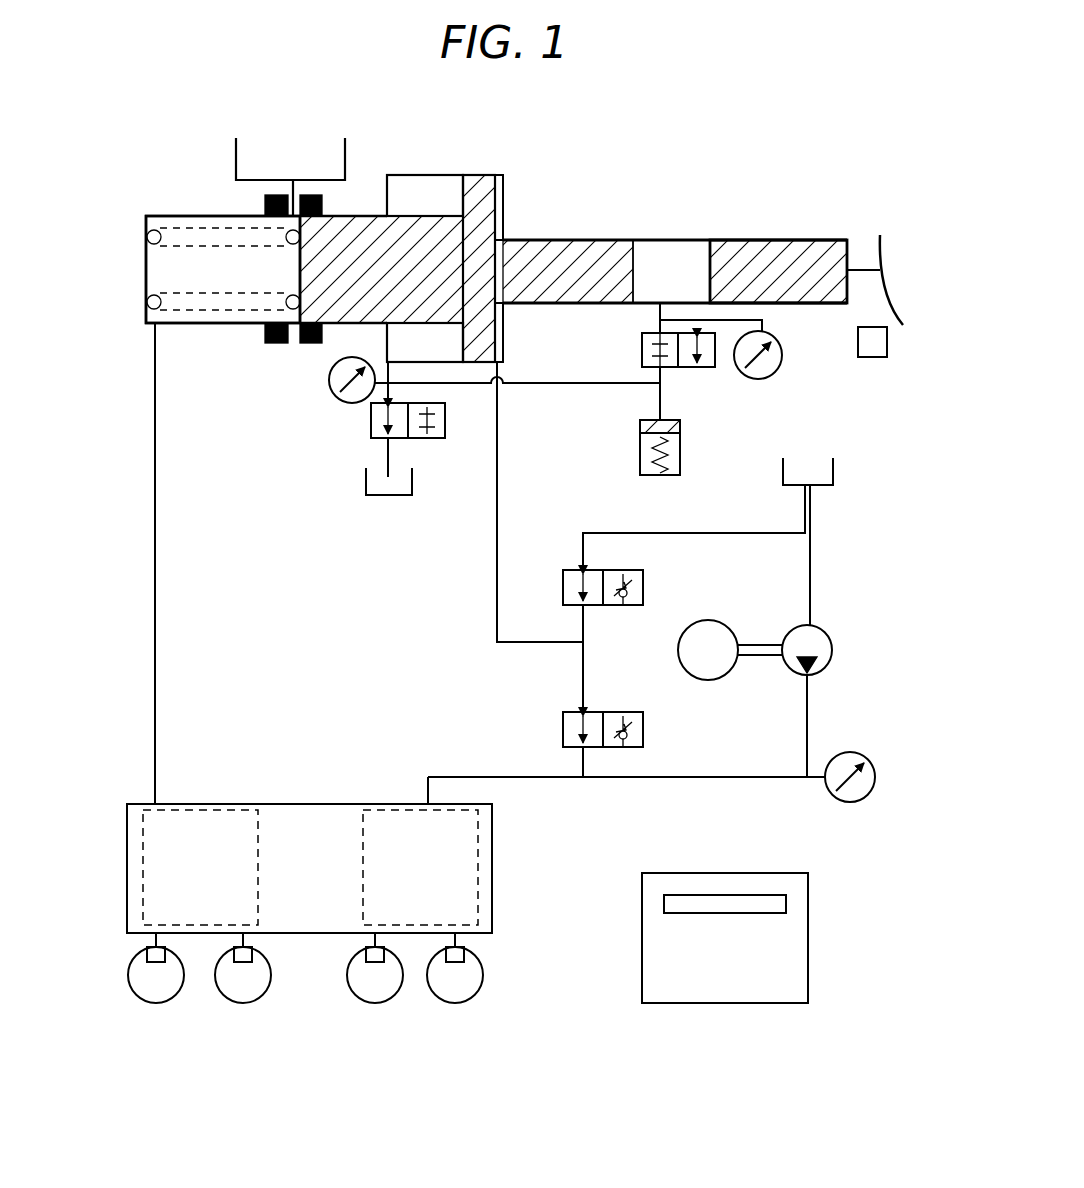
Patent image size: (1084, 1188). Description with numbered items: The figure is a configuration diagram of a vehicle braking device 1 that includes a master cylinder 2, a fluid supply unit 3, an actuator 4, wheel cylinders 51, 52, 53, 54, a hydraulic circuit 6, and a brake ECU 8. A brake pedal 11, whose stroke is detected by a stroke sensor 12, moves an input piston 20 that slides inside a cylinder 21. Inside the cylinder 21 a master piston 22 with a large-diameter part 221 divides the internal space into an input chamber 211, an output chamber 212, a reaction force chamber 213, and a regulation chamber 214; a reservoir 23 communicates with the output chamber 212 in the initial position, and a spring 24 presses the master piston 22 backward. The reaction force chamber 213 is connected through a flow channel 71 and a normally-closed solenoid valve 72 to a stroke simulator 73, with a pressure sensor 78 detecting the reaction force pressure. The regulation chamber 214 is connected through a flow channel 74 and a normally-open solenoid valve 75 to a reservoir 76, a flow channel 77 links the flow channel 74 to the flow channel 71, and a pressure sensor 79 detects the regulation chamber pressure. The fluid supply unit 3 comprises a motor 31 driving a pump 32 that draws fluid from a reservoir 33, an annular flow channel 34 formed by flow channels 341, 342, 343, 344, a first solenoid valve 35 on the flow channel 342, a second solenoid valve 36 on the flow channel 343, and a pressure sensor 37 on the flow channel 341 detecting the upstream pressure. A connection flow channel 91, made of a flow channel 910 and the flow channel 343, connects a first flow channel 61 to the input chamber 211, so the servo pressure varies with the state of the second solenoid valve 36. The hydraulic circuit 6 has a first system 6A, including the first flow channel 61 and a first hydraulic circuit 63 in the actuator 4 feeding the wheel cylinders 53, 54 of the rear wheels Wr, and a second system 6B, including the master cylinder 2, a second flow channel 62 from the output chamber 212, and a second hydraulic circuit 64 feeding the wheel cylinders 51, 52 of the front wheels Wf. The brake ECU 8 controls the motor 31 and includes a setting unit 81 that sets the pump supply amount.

The vehicle braking device 1 is at (118, 143).
The master cylinder 2 is at (130, 210).
The fluid supply unit 3 is at (880, 497).
The actuator 4 is at (127, 840).
The hydraulic circuit 6 is at (128, 692).
The first system 6A is at (412, 728).
The second system 6B is at (130, 448).
The brake ECU 8 is at (642, 912).
The brake pedal 11 is at (895, 302).
The stroke sensor 12 is at (876, 350).
The input piston 20 is at (792, 247).
The cylinder 21 is at (142, 282).
The master piston 22 is at (365, 240).
The reservoir 23 is at (236, 162).
The spring 24 is at (212, 326).
The motor 31 is at (716, 624).
The pump 32 is at (833, 646).
The reservoir 33 is at (834, 474).
The annular flow channel 34 is at (808, 714).
The first solenoid valve 35 is at (563, 578).
The second solenoid valve 36 is at (563, 730).
The pressure sensor 37 is at (870, 776).
The wheel cylinder 51 is at (152, 965).
The wheel cylinder 52 is at (245, 965).
The wheel cylinder 53 is at (370, 965).
The wheel cylinder 54 is at (460, 965).
The first flow channel 61 is at (508, 782).
The second flow channel 62 is at (150, 598).
The first hydraulic circuit 63 is at (392, 800).
The second hydraulic circuit 64 is at (143, 872).
The flow channel 71 is at (664, 388).
The solenoid valve 72 is at (642, 342).
The stroke simulator 73 is at (640, 450).
The flow channel 74 is at (386, 452).
The solenoid valve 75 is at (420, 440).
The reservoir 76 is at (366, 496).
The flow channel 77 is at (520, 386).
The pressure sensor 78 is at (772, 378).
The pressure sensor 79 is at (329, 383).
The setting unit 81 is at (786, 902).
The connection flow channel 91 is at (497, 548).
The flow channel 910 is at (497, 610).
The input chamber 211 is at (500, 333).
The output chamber 212 is at (162, 265).
The reaction force chamber 213 is at (672, 250).
The regulation chamber 214 is at (418, 195).
The large-diameter part 221 is at (485, 195).
The flow channel 341 is at (685, 780).
The flow channel 342 is at (668, 533).
The flow channel 343 is at (583, 683).
The flow channel 344 is at (810, 562).
The front wheels Wf is at (128, 975).
The rear wheels Wr is at (347, 975).